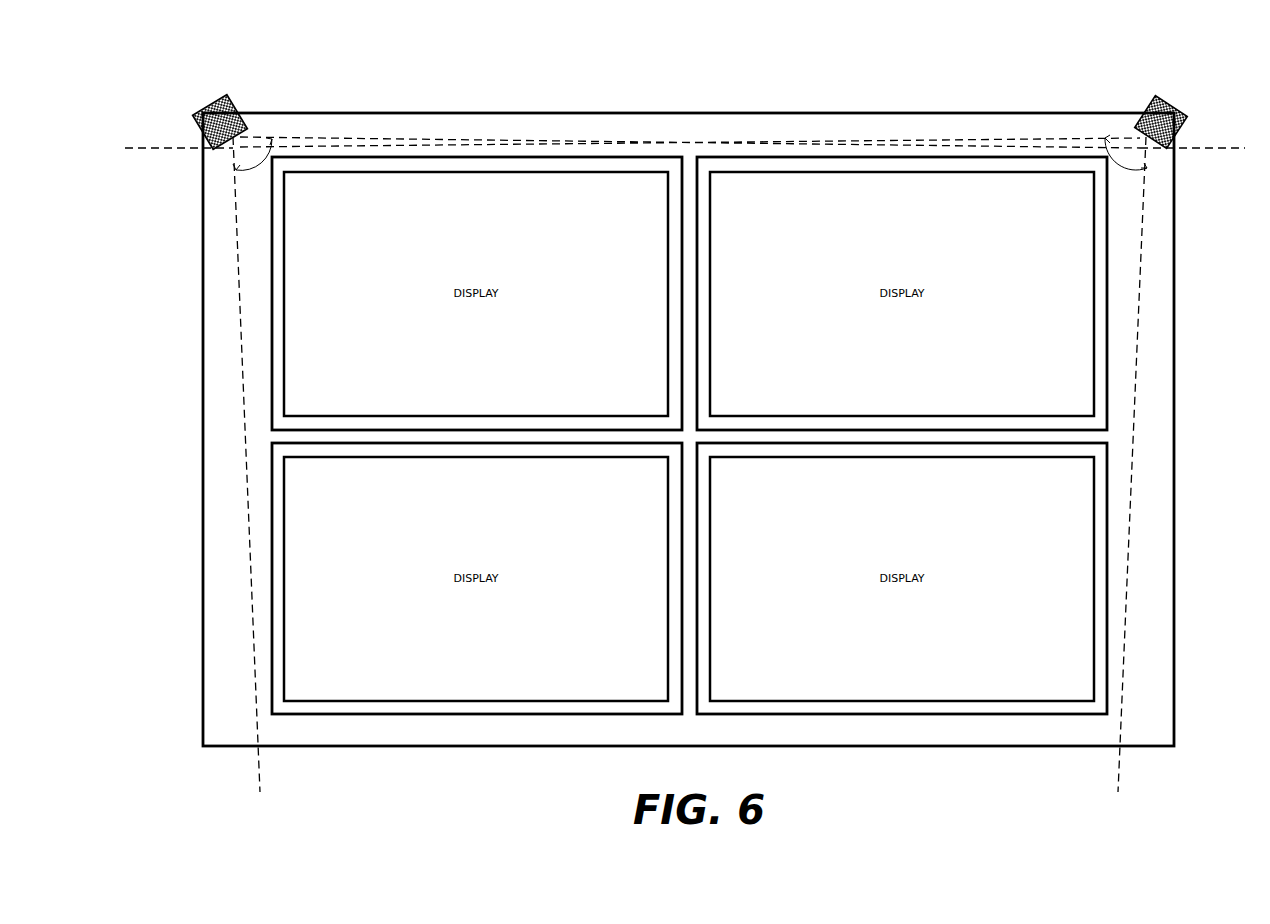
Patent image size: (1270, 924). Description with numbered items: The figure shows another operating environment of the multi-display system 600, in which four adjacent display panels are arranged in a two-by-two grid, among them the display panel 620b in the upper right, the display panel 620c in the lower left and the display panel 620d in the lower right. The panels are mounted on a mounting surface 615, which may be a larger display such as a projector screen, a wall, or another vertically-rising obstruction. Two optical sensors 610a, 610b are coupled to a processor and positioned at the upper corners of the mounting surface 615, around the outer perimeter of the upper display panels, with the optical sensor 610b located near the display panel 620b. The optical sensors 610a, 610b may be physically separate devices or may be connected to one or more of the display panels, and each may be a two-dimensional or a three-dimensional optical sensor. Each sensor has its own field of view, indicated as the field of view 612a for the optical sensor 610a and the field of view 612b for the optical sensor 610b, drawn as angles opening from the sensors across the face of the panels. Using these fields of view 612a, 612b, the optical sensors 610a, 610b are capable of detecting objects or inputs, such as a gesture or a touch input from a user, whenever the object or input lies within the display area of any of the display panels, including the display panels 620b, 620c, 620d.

The multi-display system 600 is at (307, 40).
The optical sensor 610a is at (210, 100).
The optical sensor 610b is at (1173, 100).
The field of view 612a is at (253, 173).
The field of view 612b is at (1132, 168).
The mounting surface 615 is at (972, 112).
The display panel 620b is at (1108, 407).
The display panel 620c is at (270, 690).
The display panel 620d is at (1108, 679).